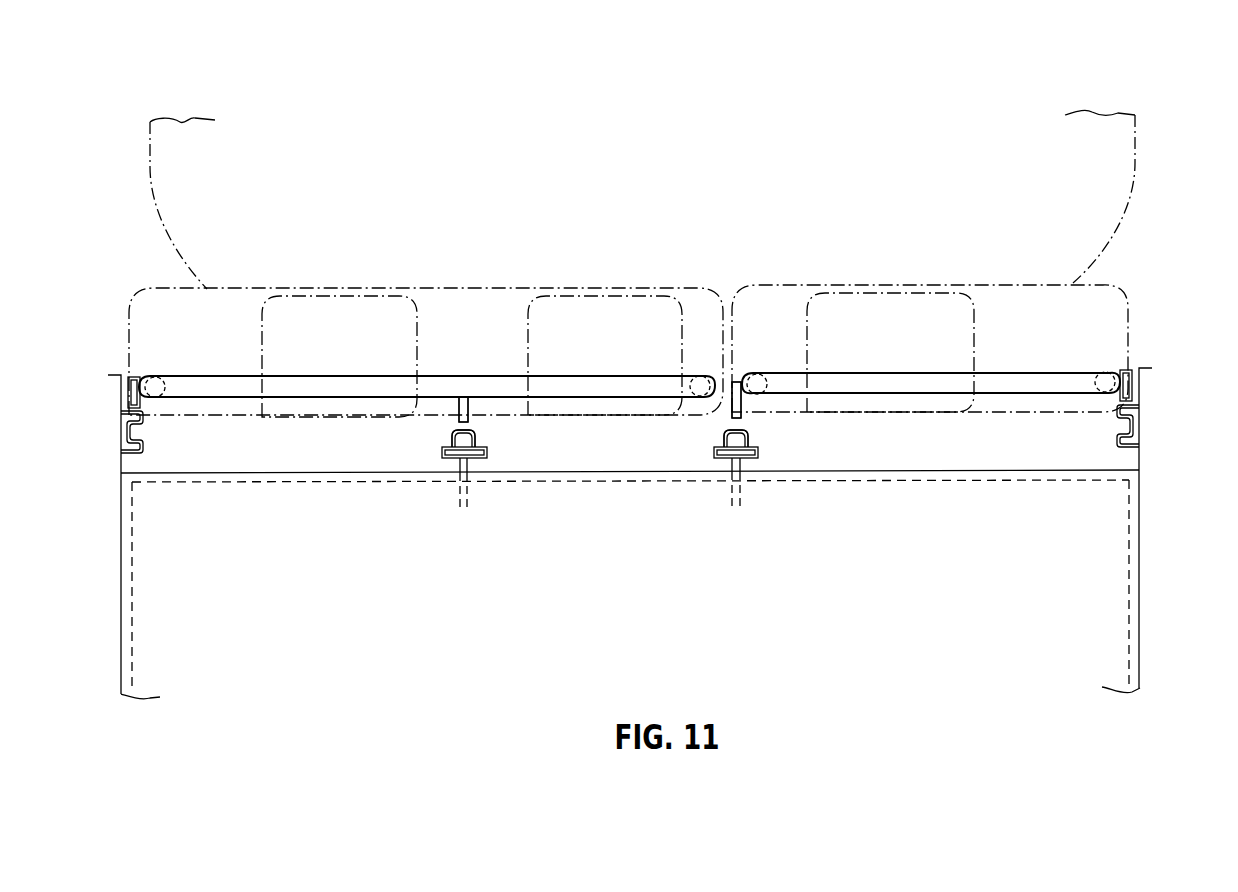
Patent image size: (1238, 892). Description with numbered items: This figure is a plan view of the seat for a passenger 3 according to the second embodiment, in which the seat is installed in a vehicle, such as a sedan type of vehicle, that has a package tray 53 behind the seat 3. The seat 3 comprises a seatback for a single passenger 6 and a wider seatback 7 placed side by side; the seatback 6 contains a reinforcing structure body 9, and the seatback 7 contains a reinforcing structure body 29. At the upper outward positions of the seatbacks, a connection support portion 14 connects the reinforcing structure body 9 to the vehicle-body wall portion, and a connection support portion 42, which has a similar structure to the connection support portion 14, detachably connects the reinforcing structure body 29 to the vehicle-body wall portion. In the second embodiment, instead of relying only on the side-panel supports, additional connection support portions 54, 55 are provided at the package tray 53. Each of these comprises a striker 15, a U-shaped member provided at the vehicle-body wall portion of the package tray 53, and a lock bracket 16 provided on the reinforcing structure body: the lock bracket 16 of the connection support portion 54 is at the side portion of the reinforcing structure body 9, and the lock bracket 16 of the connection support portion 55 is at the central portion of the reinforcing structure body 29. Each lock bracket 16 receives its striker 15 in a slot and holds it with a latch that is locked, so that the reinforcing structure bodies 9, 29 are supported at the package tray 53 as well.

The seat for a passenger 3 is at (1149, 146).
The seatback for a single passenger 6 is at (1120, 287).
The seatback 7 is at (153, 287).
The reinforcing structure body 9 is at (1088, 369).
The reinforcing structure body 29 is at (193, 375).
The connection support portion 14 is at (1149, 395).
The connection support portion 42 is at (109, 428).
The striker 15 is at (448, 432).
The lock bracket 16 is at (468, 403).
The package tray 53 is at (1117, 577).
The connection support portion 54 is at (771, 441).
The connection support portion 55 is at (499, 455).